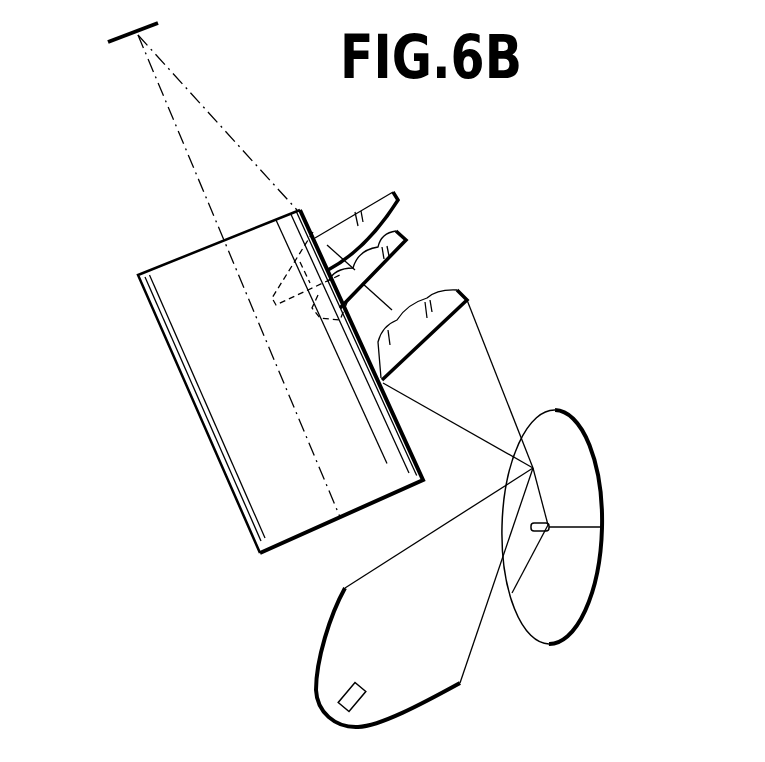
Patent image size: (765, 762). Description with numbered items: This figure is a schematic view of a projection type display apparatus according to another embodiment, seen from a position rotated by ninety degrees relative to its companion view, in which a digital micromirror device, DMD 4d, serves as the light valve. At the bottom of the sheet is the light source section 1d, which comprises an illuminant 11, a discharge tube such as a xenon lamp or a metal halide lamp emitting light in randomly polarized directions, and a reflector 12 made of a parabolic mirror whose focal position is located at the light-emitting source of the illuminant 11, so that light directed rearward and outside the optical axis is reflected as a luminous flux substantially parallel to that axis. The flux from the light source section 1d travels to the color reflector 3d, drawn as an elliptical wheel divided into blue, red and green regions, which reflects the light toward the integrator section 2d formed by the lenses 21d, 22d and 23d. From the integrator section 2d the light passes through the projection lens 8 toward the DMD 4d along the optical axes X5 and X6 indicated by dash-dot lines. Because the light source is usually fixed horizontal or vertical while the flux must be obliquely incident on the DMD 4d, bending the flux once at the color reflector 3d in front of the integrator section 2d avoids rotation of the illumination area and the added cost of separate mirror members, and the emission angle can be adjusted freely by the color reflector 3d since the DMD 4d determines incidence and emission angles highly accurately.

The DMD 4d is at (153, 31).
The optical axis X5 is at (235, 143).
The optical axis X6 is at (185, 160).
The projection lens 8 is at (207, 392).
The integrator section 2d is at (416, 266).
The integrator section lens 21d is at (465, 297).
The integrator section lens 22d is at (416, 237).
The integrator section lens 23d is at (398, 195).
The color reflector 3d is at (550, 408).
The light source section 1d is at (346, 657).
The reflector 12 is at (330, 620).
The illuminant 11 is at (363, 685).